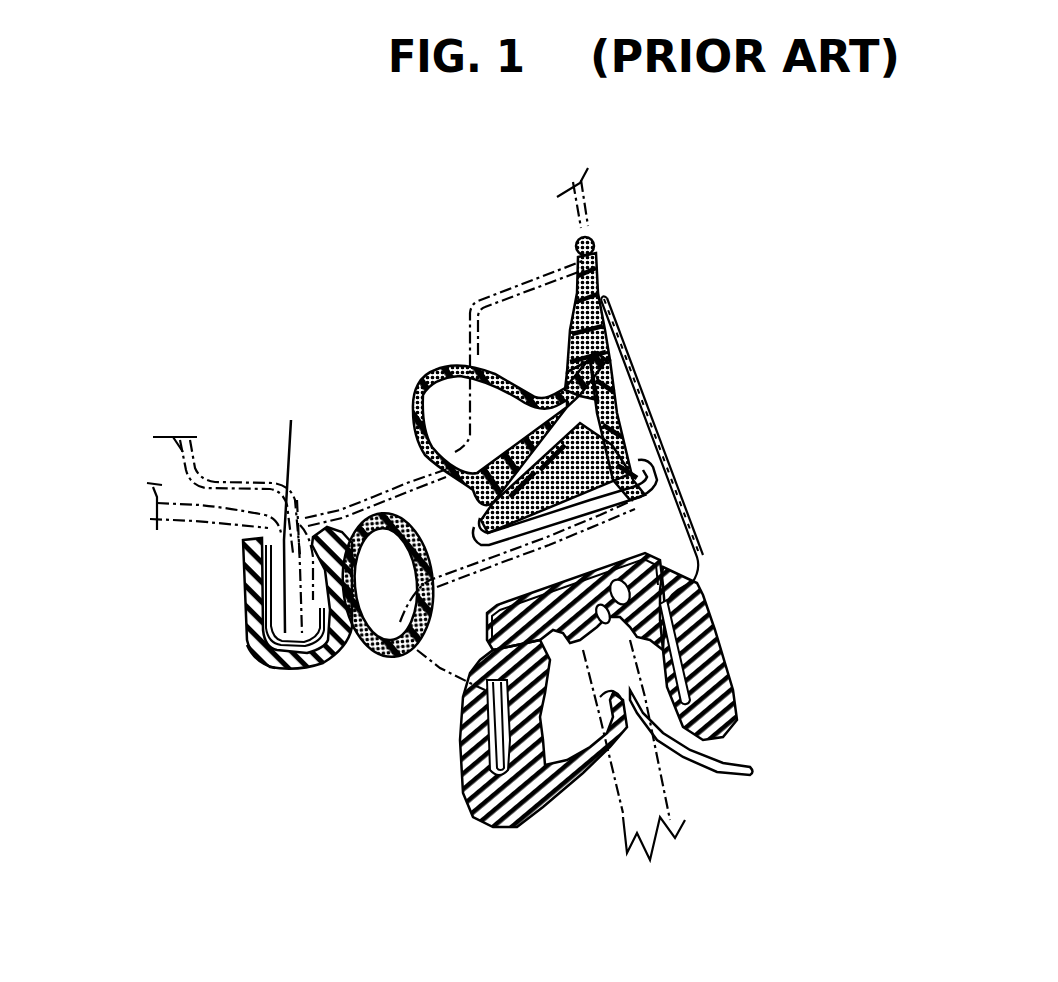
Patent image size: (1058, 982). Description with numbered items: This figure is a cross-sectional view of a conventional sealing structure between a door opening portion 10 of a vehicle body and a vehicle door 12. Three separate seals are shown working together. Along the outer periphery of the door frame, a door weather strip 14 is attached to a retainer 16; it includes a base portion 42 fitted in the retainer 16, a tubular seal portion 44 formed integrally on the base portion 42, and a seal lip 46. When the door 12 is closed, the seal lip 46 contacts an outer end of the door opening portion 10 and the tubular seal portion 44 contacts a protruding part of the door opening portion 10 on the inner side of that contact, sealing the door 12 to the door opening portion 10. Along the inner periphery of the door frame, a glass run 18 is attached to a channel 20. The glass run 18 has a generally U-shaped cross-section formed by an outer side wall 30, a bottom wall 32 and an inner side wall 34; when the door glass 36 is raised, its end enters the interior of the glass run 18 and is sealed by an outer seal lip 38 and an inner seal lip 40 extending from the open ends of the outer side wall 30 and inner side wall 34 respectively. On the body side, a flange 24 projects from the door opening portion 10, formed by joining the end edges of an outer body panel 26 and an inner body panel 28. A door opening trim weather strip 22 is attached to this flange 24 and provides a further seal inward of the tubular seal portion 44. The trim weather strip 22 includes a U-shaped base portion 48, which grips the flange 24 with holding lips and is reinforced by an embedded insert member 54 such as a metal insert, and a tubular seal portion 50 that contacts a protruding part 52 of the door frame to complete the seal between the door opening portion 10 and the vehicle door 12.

The door opening portion 10 is at (360, 478).
The vehicle door 12 is at (646, 456).
The door weather strip 14 is at (443, 365).
The retainer 16 is at (592, 460).
The glass run 18 is at (634, 689).
The channel 20 is at (560, 587).
The door opening trim weather strip 22 is at (242, 587).
The flange 24 is at (296, 512).
The outer body panel 26 is at (360, 478).
The inner body panel 28 is at (185, 472).
The outer side wall 30 is at (705, 633).
The bottom wall 32 is at (633, 582).
The inner side wall 34 is at (466, 768).
The door glass 36 is at (670, 798).
The outer seal lip 38 is at (687, 767).
The inner seal lip 40 is at (580, 790).
The base portion 42 is at (605, 378).
The tubular seal portion 44 is at (417, 400).
The seal lip 46 is at (598, 261).
The base portion 48 is at (263, 657).
The tubular seal portion 50 is at (380, 657).
The protruding part 52 is at (455, 683).
The insert member 54 is at (247, 633).